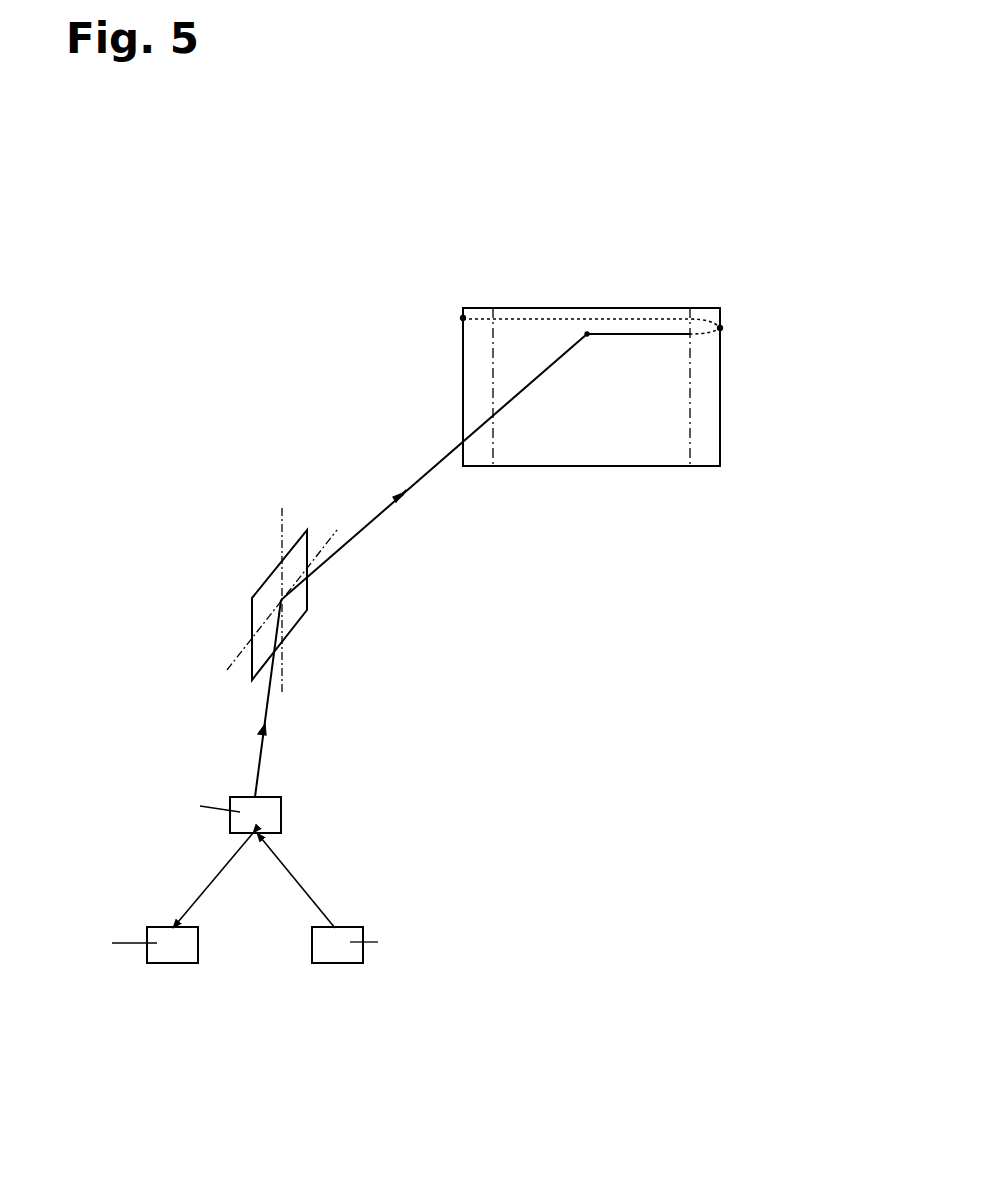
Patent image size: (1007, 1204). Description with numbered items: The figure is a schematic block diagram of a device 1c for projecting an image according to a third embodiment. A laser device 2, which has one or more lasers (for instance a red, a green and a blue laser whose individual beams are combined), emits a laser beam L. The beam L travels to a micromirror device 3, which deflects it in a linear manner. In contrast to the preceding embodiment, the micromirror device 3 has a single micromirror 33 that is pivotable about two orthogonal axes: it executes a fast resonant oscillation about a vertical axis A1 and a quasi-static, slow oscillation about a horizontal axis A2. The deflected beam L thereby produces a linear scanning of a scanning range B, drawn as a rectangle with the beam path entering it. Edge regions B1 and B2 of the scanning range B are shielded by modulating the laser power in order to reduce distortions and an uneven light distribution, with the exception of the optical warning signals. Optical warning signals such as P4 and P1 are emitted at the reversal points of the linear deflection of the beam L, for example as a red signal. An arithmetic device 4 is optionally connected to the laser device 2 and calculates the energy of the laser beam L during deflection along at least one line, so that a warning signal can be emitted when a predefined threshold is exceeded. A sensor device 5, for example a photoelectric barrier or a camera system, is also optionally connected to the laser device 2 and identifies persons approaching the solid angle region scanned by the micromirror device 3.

The device for projecting an image 1c is at (327, 240).
The laser device 2 is at (281, 814).
The micromirror device 3 is at (318, 641).
The micromirror 33 is at (252, 598).
The arithmetic device 4 is at (172, 963).
The sensor device 5 is at (338, 963).
The laser beam L is at (260, 760).
The vertical axis A1 is at (282, 530).
The horizontal axis A2 is at (228, 661).
The scanning range B is at (623, 450).
The edge region B1 is at (705, 450).
The edge region B2 is at (483, 450).
The optical warning signal P1 is at (722, 328).
The optical warning signal P4 is at (463, 318).